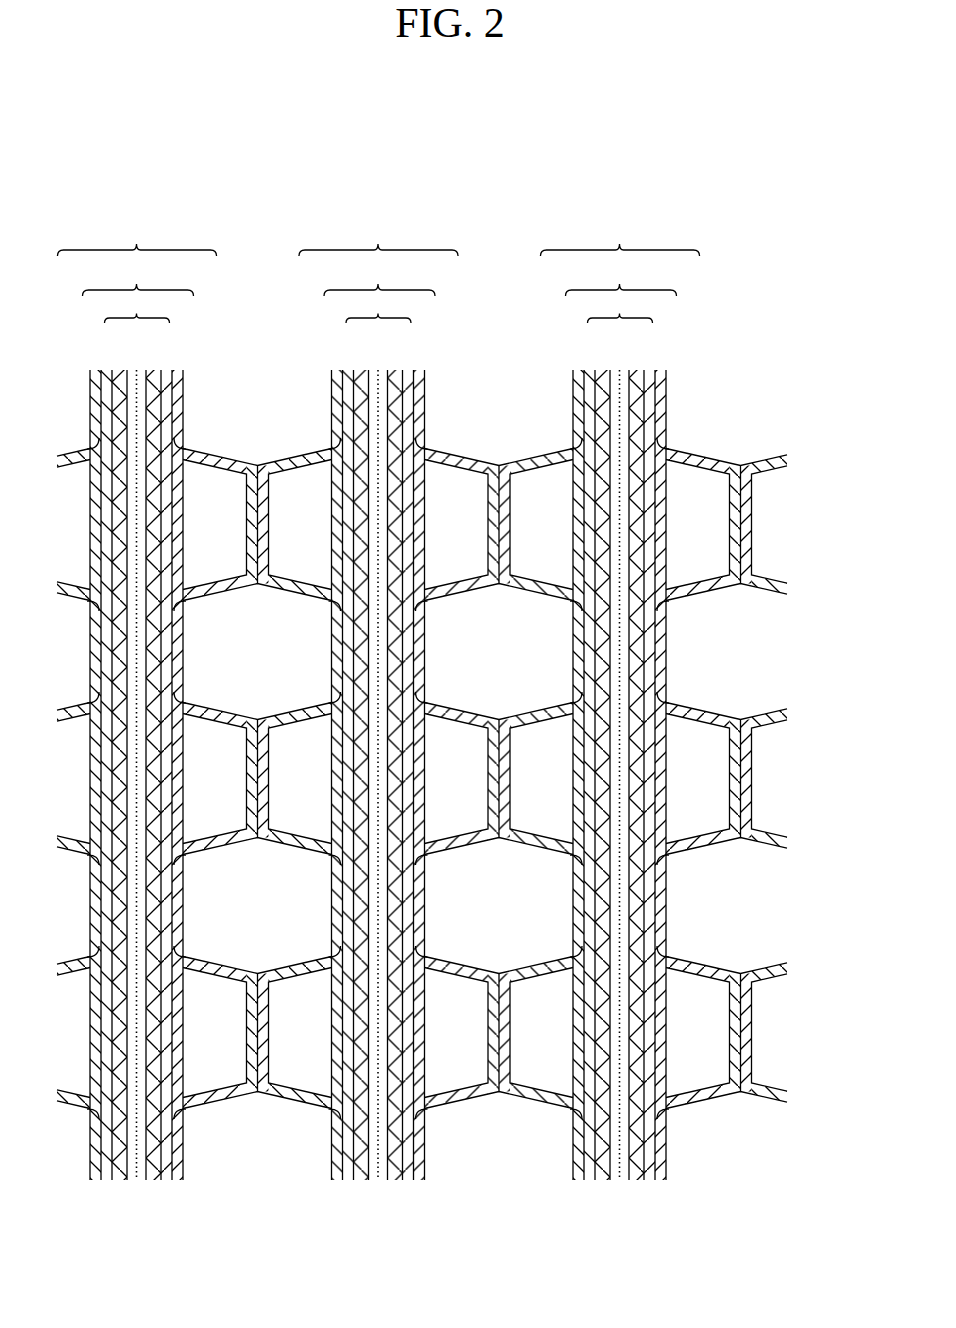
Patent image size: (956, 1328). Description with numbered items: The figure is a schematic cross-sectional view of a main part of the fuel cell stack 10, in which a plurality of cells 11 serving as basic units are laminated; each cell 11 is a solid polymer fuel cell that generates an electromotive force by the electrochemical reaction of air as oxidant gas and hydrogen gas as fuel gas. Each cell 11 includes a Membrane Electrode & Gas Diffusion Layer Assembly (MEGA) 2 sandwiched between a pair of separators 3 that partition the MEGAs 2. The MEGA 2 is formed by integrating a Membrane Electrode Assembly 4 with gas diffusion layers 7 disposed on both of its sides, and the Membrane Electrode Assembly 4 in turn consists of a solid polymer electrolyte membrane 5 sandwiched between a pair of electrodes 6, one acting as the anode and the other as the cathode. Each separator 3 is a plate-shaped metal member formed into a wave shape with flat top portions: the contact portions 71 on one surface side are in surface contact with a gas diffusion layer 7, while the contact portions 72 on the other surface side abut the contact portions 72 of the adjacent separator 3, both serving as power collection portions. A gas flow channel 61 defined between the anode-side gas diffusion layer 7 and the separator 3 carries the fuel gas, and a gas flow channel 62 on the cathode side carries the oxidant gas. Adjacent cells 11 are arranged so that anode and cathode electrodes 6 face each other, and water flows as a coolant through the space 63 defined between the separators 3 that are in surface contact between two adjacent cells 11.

The fuel cell stack 10 is at (765, 252).
The cell 11 is at (379, 237).
The Membrane Electrode & Gas Diffusion Layer Assembly (MEGA) 2 is at (380, 279).
The separator 3 is at (202, 450).
The Membrane Electrode Assembly (MEA) 4 is at (379, 307).
The electrolyte membrane 5 is at (620, 370).
The electrode 6 is at (154, 372).
The gas diffusion layer 7 is at (178, 372).
The gas flow channel 61 is at (293, 536).
The gas flow channel 62 is at (193, 536).
The space 63 is at (244, 661).
The contact portion 71 is at (185, 683).
The contact portion 72 is at (246, 497).